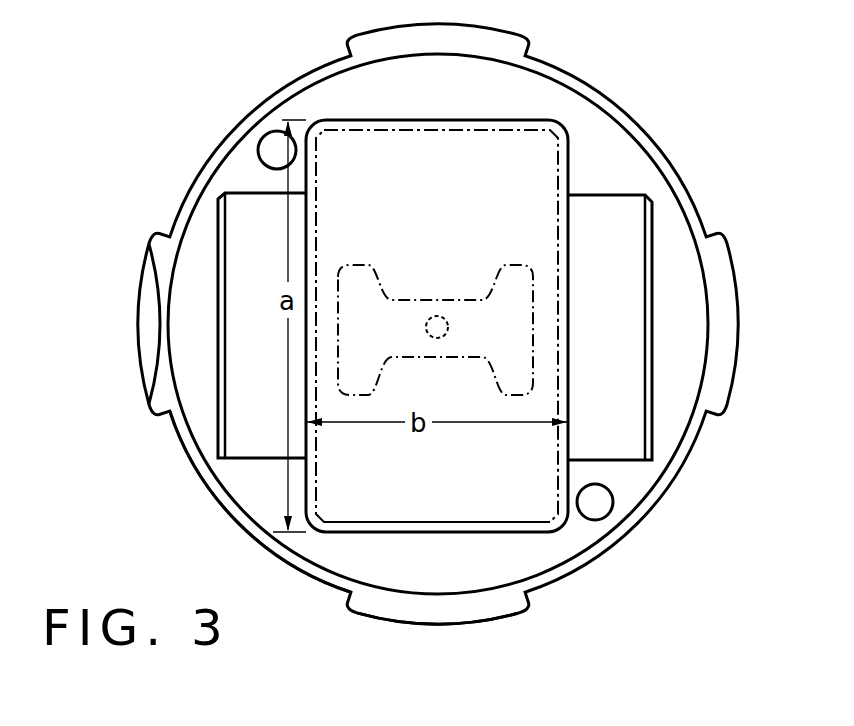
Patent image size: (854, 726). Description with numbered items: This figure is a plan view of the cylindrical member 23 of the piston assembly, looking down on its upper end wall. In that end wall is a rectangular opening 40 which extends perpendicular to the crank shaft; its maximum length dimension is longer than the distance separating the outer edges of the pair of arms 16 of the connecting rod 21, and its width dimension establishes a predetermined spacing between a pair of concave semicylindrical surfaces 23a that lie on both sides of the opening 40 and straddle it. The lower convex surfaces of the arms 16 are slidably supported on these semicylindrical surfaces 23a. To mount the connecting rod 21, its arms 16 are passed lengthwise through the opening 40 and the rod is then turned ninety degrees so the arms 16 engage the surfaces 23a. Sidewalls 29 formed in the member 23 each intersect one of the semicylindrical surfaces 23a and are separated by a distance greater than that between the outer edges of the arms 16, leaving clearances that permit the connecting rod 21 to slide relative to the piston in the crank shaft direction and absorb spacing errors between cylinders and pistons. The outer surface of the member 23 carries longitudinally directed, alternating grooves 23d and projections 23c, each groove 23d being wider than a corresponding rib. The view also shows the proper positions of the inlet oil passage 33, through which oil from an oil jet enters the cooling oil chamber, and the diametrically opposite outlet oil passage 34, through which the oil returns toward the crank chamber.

The arms 16 is at (454, 168).
The connecting rod 21 is at (460, 308).
The cylindrical member 23 is at (253, 499).
The concave semicylindrical surfaces 23a is at (268, 454).
The projections 23c is at (157, 342).
The grooves 23d is at (191, 471).
The sidewalls 29 is at (220, 252).
The inlet oil passage 33 is at (274, 144).
The outlet oil passage 34 is at (597, 503).
The rectangular opening 40 is at (427, 528).